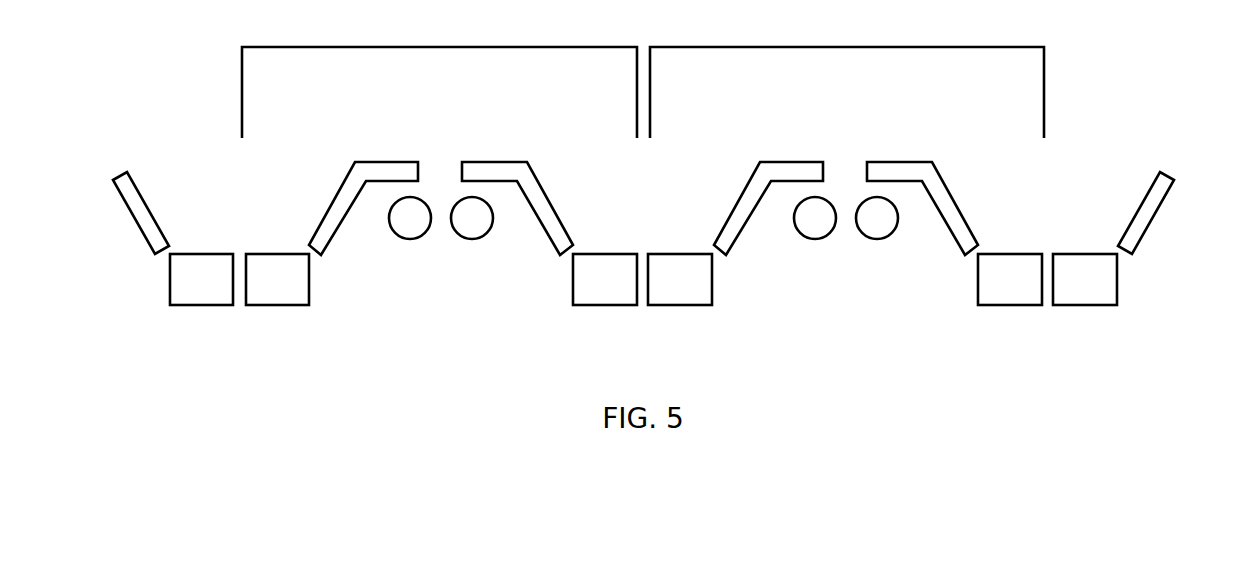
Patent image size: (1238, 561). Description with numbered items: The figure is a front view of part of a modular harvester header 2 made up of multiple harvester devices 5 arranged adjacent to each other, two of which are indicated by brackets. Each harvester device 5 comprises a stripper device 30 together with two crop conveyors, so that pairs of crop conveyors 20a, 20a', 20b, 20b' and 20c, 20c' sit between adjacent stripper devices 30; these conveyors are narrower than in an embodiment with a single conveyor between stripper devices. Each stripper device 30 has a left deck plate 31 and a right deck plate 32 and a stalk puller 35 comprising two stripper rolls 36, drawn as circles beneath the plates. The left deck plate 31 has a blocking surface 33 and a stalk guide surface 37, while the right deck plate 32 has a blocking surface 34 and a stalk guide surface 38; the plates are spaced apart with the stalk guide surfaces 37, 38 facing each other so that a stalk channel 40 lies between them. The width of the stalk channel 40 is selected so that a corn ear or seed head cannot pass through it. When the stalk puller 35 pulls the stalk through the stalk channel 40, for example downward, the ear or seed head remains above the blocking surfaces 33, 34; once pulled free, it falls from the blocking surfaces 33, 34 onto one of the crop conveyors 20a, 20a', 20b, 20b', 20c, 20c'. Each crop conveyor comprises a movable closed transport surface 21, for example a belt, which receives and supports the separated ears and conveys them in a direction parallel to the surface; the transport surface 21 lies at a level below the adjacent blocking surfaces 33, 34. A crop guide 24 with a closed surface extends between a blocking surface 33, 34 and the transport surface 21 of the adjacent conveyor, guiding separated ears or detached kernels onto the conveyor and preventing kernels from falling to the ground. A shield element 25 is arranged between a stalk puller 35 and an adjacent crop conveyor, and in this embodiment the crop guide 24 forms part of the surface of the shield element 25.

The harvester header 2 is at (1061, 107).
The harvester device 5 is at (440, 47).
The crop conveyor 20a is at (586, 316).
The crop conveyor 20a' is at (678, 316).
The crop conveyor 20b is at (182, 318).
The crop conveyor 20b' is at (277, 318).
The crop conveyor 20c is at (991, 316).
The crop conveyor 20c' is at (1090, 316).
The closed transport surface 21 is at (208, 251).
The crop guide 24 is at (149, 170).
The shield element 25 is at (143, 222).
The stripper device 30 is at (417, 306).
The left deck plate 31 is at (508, 172).
The right deck plate 32 is at (378, 170).
The blocking surface 33 is at (514, 161).
The blocking surface 34 is at (406, 161).
The stalk puller 35 is at (374, 240).
The stripper roll 36 is at (403, 232).
The stalk guide surface 37 is at (450, 162).
The stalk guide surface 38 is at (426, 162).
The stalk channel 40 is at (441, 170).